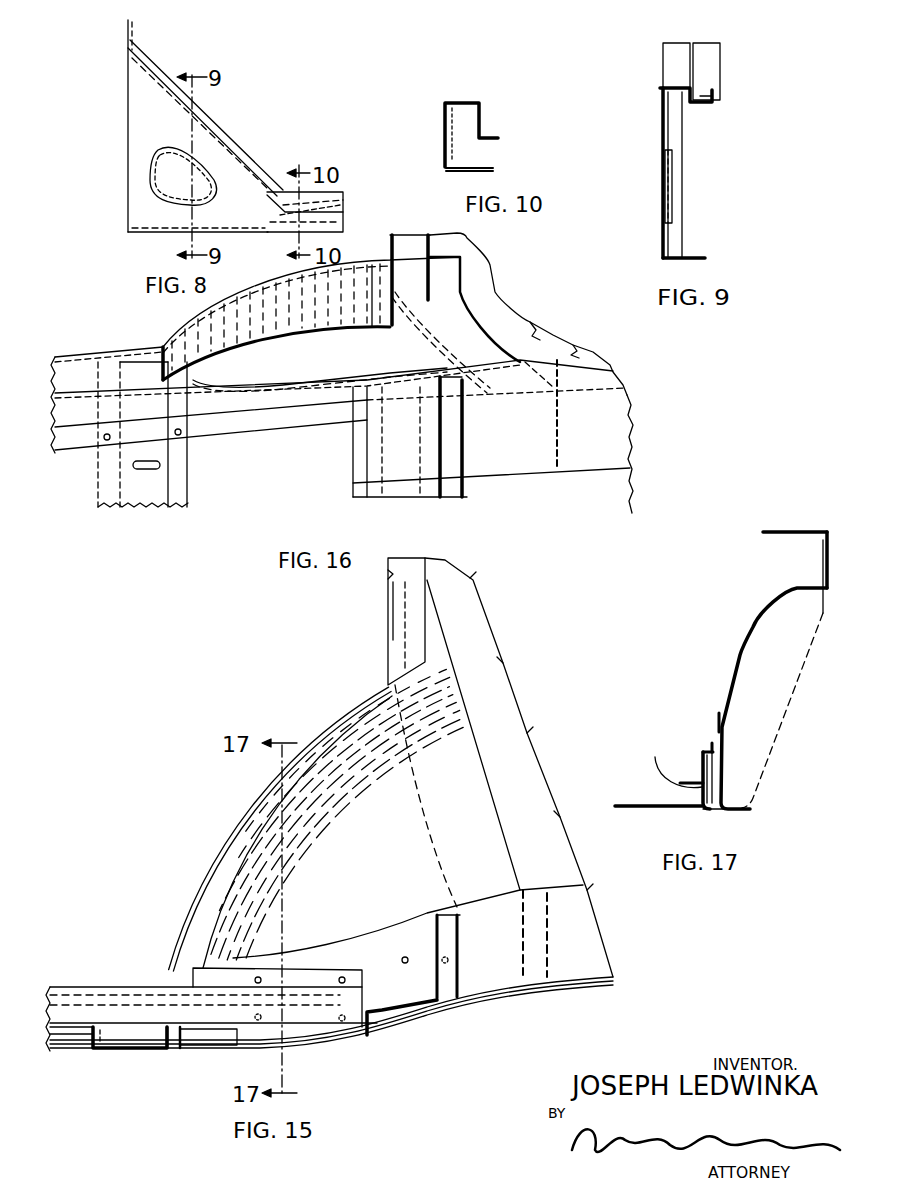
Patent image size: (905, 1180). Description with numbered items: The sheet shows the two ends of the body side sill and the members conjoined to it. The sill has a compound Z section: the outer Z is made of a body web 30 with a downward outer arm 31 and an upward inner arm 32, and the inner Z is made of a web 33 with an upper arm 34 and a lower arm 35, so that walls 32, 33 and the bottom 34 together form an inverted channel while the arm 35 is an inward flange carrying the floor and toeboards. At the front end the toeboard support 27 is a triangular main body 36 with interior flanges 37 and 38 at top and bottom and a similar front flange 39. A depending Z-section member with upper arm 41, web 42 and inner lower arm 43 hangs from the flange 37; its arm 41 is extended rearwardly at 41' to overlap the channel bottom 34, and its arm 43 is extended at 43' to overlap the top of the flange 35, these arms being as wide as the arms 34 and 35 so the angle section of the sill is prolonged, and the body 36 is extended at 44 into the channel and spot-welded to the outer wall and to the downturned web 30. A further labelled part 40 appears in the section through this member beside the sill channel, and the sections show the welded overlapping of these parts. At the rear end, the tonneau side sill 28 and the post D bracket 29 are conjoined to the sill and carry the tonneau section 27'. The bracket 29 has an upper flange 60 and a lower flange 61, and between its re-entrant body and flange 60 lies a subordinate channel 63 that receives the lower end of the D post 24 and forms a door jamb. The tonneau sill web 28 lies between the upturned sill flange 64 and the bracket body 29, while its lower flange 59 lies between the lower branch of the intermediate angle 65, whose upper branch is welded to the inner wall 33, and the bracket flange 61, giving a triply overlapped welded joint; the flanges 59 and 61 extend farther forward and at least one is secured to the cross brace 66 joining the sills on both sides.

In FIG. 15, the D post 24 is at (403, 570).
In FIG. 16, the toeboard support 27 is at (567, 336).
In FIG. 15, the tonneau section of the body 27' is at (519, 795).
In FIG. 16, the tonneau side sill 28 is at (290, 482).
In FIG. 15, the tonneau side sill 28 is at (567, 938).
In FIG. 17, the tonneau side sill 28 is at (640, 802).
In FIG. 16, the post D bracket 29 is at (473, 337).
In FIG. 15, the post D bracket 29 is at (473, 855).
In FIG. 17, the post D bracket 29 is at (777, 680).
In FIG. 10, the body web of outer Z section 30 is at (447, 150).
In FIG. 16, the body web of outer Z section 30 is at (80, 377).
In FIG. 15, the outer arm of outer Z section 31 is at (103, 1040).
In FIG. 10, the inner arm of outer Z section 32 is at (444, 131).
In FIG. 15, the inner arm of outer Z section 32 is at (82, 1030).
In FIG. 10, the web of inner Z section 33 is at (483, 126).
In FIG. 15, the web of inner Z section 33 is at (75, 1005).
In FIG. 17, the web of inner Z section 33 is at (707, 750).
In FIG. 10, the upper arm of inner Z section 34 is at (456, 103).
In FIG. 16, the upper arm of inner Z section 34 is at (70, 410).
In FIG. 15, the upper arm of inner Z section 34 is at (60, 983).
In FIG. 17, the upper arm of inner Z section 34 is at (710, 745).
In FIG. 10, the lower arm of inner Z section 35 is at (482, 146).
In FIG. 16, the lower arm of inner Z section 35 is at (80, 437).
In FIG. 15, the lower arm of inner Z section 35 is at (90, 1020).
In FIG. 17, the lower arm of inner Z section 35 is at (693, 778).
In FIG. 8, the main body of toeboard support 36 is at (205, 136).
In FIG. 9, the upper flange of toeboard support 37 is at (675, 92).
In FIG. 9, the lower flange of toeboard support 38 is at (690, 256).
In FIG. 8, the front flange of toeboard support 39 is at (127, 103).
In FIG. 10, the sill section 40 is at (468, 152).
In FIG. 9, the upper arm of depending flange member 41 is at (671, 71).
In FIG. 8, the rearward extension of arm 41 41' is at (304, 161).
In FIG. 10, the rearward extension of arm 41 41' is at (514, 90).
In FIG. 9, the web of depending flange member 42 is at (706, 97).
In FIG. 9, the inner and lower arm of depending flange member 43 is at (698, 121).
In FIG. 8, the rearward extension of arm 43 43' is at (332, 188).
In FIG. 10, the rearward extension of arm 43 43' is at (524, 138).
In FIG. 8, the extension of toeboard support body 44 is at (343, 200).
In FIG. 15, the lower flange of tonneau side sill 59 is at (472, 995).
In FIG. 16, the upper flange of post D bracket 60 is at (270, 312).
In FIG. 15, the upper flange of post D bracket 60 is at (250, 808).
In FIG. 17, the upper flange of post D bracket 60 is at (795, 532).
In FIG. 16, the lower flange of post D bracket 61 is at (128, 485).
In FIG. 15, the lower flange of post D bracket 61 is at (175, 1053).
In FIG. 17, the lower flange of post D bracket 61 is at (672, 808).
In FIG. 15, the subordinate channel section 63 is at (330, 748).
In FIG. 17, the subordinate channel section 63 is at (829, 548).
In FIG. 16, the upwardly extending flange of side sill 64 is at (300, 400).
In FIG. 15, the upwardly extending flange of side sill 64 is at (307, 975).
In FIG. 17, the upwardly extending flange of side sill 64 is at (712, 740).
In FIG. 15, the intermediate angle 65 is at (235, 1035).
In FIG. 17, the intermediate angle 65 is at (675, 756).
In FIG. 16, the cross brace 66 is at (155, 500).
In FIG. 15, the cross brace 66 is at (137, 1053).